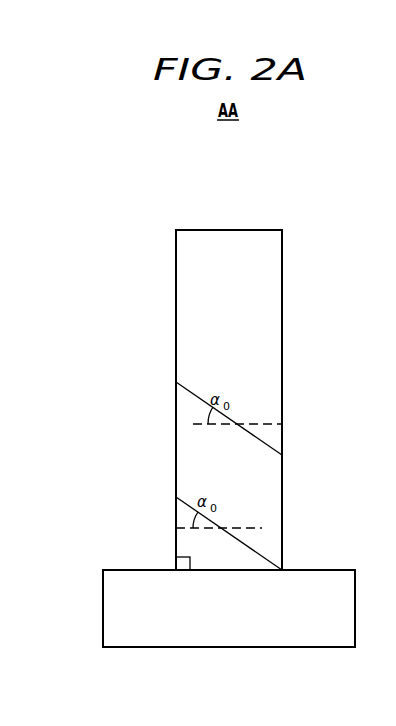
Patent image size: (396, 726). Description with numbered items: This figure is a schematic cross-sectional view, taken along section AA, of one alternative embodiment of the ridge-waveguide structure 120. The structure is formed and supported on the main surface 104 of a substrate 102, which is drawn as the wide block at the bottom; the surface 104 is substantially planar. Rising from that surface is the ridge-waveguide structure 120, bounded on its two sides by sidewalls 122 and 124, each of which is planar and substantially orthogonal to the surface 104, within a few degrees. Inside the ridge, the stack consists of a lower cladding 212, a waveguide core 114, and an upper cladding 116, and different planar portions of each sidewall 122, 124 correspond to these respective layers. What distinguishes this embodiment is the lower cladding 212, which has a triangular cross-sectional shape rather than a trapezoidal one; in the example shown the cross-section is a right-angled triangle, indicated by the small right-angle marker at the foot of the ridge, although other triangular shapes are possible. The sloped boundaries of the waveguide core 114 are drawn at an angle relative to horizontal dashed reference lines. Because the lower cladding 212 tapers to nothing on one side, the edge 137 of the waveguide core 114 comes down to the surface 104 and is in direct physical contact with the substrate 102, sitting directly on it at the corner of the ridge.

The substrate 102 is at (143, 648).
The main surface 104 is at (329, 564).
The waveguide core 114 is at (190, 447).
The upper cladding 116 is at (272, 309).
The ridge-waveguide structure 120 is at (228, 211).
The sidewall 122 is at (170, 312).
The sidewall 124 is at (290, 368).
The edge 137 is at (281, 580).
The lower cladding 212 is at (190, 540).